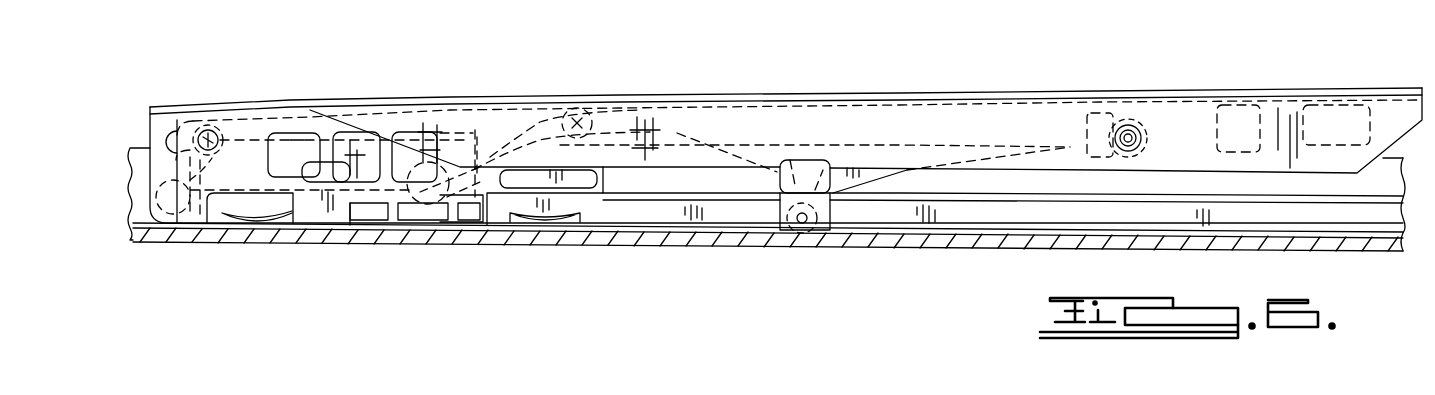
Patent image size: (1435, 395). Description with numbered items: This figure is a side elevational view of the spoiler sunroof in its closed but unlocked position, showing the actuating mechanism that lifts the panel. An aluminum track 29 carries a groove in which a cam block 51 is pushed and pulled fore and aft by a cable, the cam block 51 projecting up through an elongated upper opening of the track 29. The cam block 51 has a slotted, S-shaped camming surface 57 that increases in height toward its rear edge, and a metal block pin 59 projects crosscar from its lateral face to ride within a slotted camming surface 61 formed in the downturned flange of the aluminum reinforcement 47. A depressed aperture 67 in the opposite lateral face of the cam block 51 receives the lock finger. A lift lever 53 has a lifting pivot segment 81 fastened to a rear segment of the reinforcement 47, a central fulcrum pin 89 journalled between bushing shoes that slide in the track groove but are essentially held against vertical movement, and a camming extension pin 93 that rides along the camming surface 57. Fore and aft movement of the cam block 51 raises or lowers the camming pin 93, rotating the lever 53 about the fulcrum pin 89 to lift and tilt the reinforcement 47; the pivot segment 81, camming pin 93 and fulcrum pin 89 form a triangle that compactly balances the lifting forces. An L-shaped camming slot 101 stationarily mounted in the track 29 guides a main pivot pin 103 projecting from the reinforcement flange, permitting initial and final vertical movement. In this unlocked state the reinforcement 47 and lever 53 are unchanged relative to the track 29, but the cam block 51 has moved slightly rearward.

The track 29 is at (597, 243).
The reinforcement 47 is at (163, 108).
The cam block 51 is at (500, 185).
The lift lever 53 is at (885, 180).
The camming surface 57 is at (503, 147).
The block pin 59 is at (213, 130).
The slotted camming surface 61 is at (413, 103).
The depressed aperture 67 is at (327, 173).
The lifting pivot segment 81 is at (1128, 138).
The fulcrum pin 89 is at (823, 113).
The camming extension pin 93 is at (577, 100).
The L-shaped camming slot 101 is at (235, 197).
The main pivot pin 103 is at (160, 213).